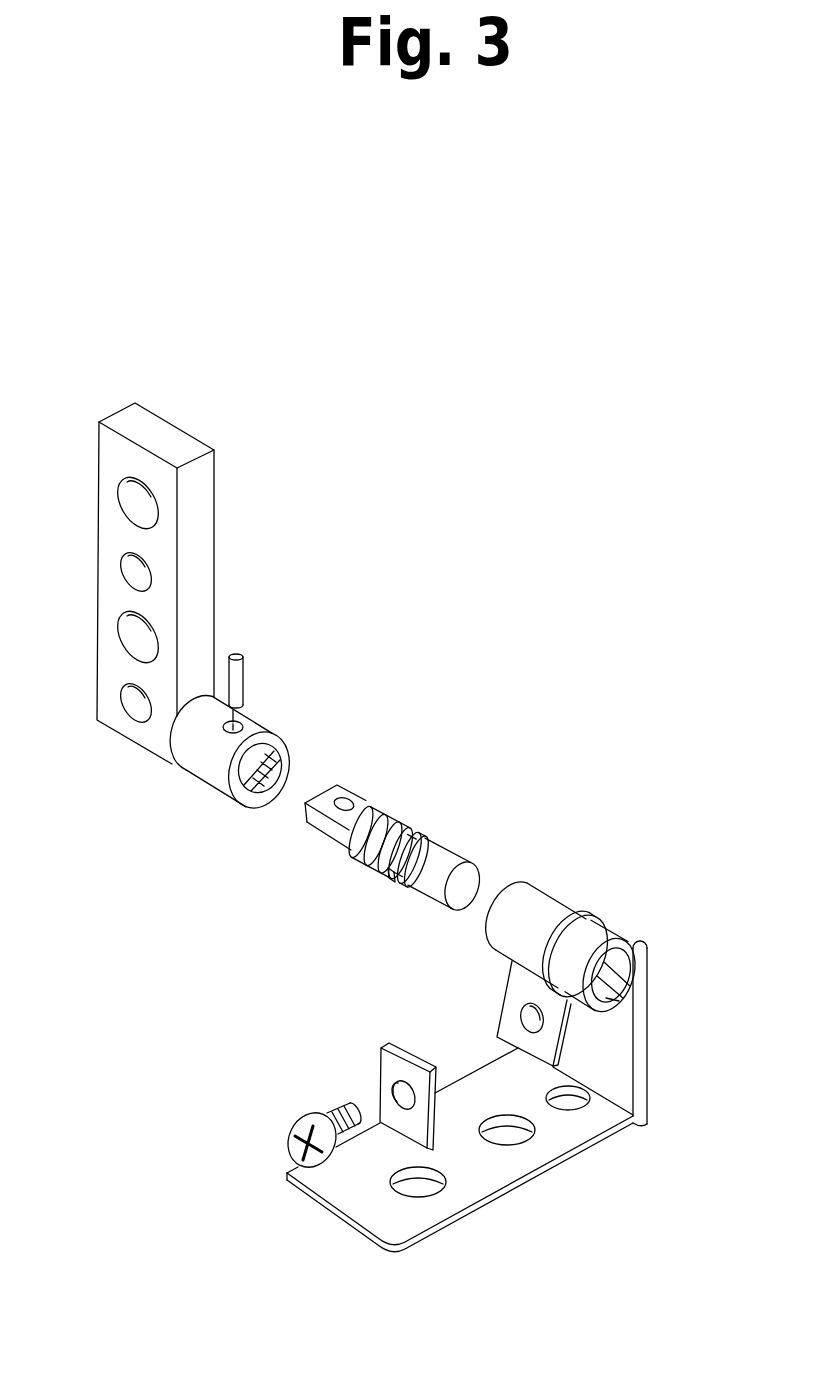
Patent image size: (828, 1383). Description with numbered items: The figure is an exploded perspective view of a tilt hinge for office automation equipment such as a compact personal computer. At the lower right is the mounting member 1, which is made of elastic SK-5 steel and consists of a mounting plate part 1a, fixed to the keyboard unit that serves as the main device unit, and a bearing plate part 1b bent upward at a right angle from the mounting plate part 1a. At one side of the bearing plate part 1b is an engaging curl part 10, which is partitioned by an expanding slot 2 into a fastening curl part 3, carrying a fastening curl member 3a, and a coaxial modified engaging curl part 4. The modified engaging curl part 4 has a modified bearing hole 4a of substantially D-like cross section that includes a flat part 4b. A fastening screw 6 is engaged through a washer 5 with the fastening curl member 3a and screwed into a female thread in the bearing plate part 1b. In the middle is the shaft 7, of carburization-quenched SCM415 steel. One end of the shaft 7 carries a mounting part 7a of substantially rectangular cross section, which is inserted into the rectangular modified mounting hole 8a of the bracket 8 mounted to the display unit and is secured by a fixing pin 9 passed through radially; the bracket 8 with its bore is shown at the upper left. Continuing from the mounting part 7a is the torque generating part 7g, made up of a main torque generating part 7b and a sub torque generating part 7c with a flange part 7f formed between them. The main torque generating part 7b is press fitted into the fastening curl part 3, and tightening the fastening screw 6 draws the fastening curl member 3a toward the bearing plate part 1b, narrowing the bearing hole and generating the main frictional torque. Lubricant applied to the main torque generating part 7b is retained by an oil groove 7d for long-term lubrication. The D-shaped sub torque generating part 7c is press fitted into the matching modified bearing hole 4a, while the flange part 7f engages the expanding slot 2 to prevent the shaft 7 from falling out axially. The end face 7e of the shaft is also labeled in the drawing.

The mounting member 1 is at (502, 1122).
The mounting plate part 1a is at (463, 1196).
The bearing plate part 1b is at (637, 1052).
The expanding slot 2 is at (584, 919).
The fastening curl part 3 is at (538, 900).
The fastening curl member 3a is at (508, 1004).
The modified engaging curl part 4 is at (604, 937).
The modified bearing hole 4a is at (618, 964).
The flat part 4b is at (634, 1008).
The washer 5 is at (390, 1070).
The fastening screw 6 is at (285, 1130).
The shaft 7 is at (400, 847).
The mounting part 7a is at (342, 788).
The main torque generating part 7b is at (402, 823).
The sub torque generating part 7c is at (450, 858).
The oil groove 7d is at (396, 878).
The end face of shaft 7e is at (463, 908).
The flange part 7f is at (426, 835).
The torque generating part 7g is at (404, 915).
The bracket 8 is at (111, 752).
The modified mounting hole 8a is at (262, 792).
The fixing pin 9 is at (231, 682).
The engaging curl part 10 is at (611, 904).